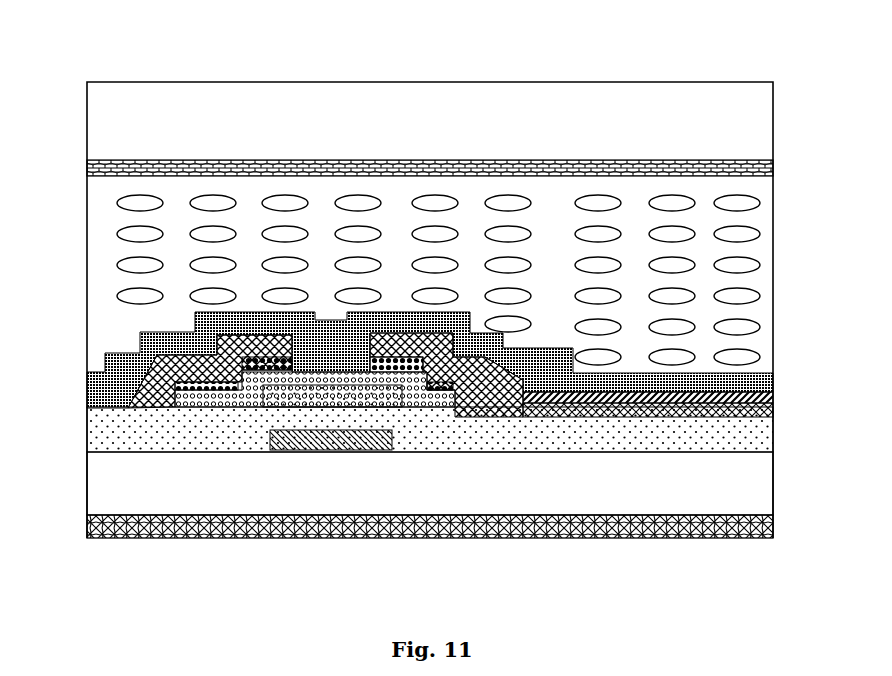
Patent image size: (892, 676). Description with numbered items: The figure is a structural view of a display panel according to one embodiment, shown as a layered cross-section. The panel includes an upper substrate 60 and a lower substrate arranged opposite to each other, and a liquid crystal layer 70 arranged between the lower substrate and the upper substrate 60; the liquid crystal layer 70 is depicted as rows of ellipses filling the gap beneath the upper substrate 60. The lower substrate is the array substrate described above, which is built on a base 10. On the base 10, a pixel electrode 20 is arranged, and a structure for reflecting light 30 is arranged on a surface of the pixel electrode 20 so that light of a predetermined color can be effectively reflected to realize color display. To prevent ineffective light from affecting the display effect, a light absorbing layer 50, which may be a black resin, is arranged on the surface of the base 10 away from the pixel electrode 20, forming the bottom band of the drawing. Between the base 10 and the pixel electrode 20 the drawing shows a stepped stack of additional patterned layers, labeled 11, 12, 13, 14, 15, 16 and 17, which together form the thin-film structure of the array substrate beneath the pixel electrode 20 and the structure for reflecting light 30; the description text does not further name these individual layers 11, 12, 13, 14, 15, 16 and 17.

The base 10 is at (430, 483).
The light shielding layer 11 is at (288, 443).
The buffer layer 12 is at (572, 442).
The active layer 13 is at (382, 387).
The gate insulating layer / gate electrode stack 14 is at (262, 373).
The first conductive contact layer 15 is at (202, 383).
The second conductive contact layer 16 is at (447, 387).
The passivation layer 17 is at (527, 367).
The pixel electrode 20 is at (727, 410).
The structure for reflecting light 30 is at (648, 407).
The light absorbing layer 50 is at (105, 518).
The upper substrate 60 is at (465, 130).
The liquid crystal layer 70 is at (717, 200).